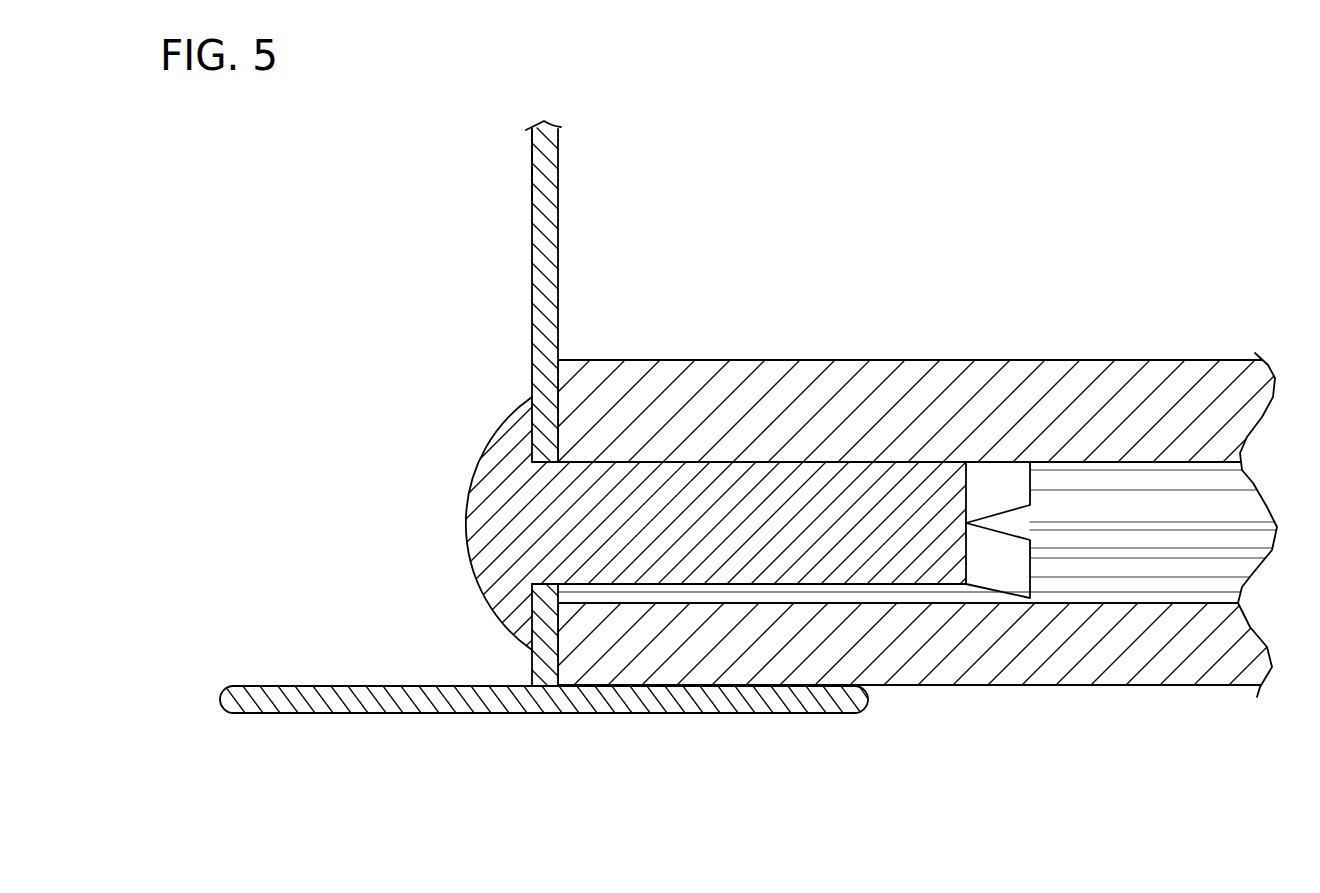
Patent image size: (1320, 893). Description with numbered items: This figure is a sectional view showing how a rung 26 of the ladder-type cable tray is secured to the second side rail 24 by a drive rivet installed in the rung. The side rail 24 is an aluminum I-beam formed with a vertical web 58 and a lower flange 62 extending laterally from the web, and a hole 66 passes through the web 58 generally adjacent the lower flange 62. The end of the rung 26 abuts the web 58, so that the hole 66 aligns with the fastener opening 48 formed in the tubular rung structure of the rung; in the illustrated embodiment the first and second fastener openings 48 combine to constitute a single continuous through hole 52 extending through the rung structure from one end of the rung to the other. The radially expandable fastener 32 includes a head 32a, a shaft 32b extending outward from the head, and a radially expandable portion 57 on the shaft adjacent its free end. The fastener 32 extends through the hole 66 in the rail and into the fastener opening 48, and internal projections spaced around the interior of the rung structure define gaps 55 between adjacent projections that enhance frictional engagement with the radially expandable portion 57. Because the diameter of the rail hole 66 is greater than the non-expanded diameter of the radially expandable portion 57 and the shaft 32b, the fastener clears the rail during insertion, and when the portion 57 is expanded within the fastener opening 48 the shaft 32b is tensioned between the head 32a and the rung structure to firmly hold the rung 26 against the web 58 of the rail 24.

The second side rail 24 is at (470, 200).
The rung 26 is at (1030, 348).
The radially expandable fastener 32 is at (868, 450).
The head 32a is at (483, 525).
The shaft 32b is at (705, 492).
The fastener opening 48 is at (812, 467).
The through hole 52 is at (1177, 511).
The gap 55 is at (892, 593).
The radially expandable portion 57 is at (1007, 570).
The web 58 is at (540, 281).
The lower flange 62 is at (335, 698).
The hole 66 is at (578, 499).